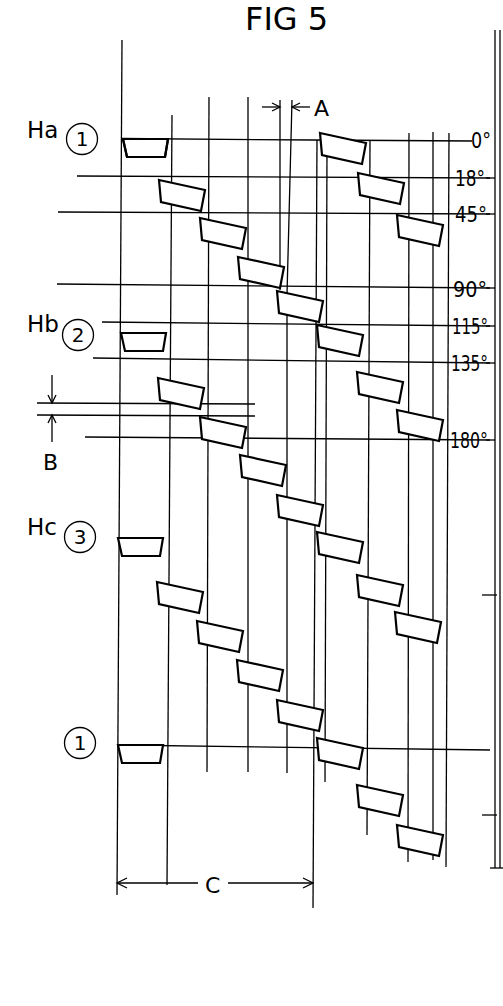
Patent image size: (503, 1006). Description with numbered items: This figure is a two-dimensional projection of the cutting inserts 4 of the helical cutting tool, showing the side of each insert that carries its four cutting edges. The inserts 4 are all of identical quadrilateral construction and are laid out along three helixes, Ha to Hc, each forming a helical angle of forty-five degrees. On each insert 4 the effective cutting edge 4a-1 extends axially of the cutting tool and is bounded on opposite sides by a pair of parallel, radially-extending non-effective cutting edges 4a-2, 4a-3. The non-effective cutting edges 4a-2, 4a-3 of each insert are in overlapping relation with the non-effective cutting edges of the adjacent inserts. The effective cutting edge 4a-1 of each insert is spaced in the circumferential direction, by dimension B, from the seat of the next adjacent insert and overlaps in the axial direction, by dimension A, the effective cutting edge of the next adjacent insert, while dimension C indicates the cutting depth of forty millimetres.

The cutting insert 4 is at (253, 465).
The effective cutting edge 4a-1 is at (142, 138).
The non-effective cutting edge 4a-2 is at (168, 152).
The non-effective cutting edge 4a-3 is at (122, 152).